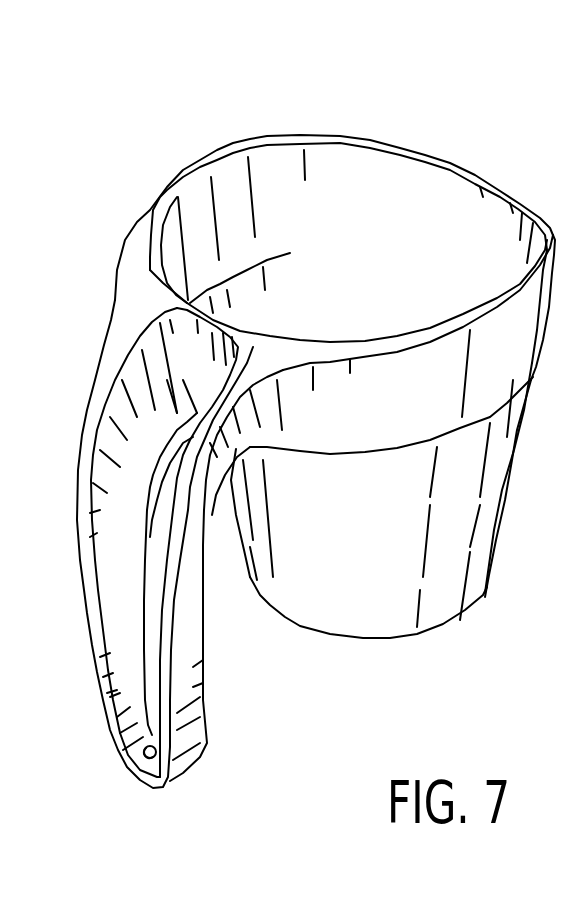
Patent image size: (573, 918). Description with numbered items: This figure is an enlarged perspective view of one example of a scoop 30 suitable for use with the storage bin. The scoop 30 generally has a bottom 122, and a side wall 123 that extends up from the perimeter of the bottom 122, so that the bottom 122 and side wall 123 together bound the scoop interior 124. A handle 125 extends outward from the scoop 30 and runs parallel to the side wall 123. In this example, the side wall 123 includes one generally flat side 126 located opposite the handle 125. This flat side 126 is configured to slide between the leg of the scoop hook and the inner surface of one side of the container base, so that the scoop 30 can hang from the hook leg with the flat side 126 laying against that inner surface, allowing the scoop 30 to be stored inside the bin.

The scoop 30 is at (431, 126).
The bottom 122 is at (389, 638).
The side wall 123 is at (345, 627).
The scoop interior 124 is at (488, 245).
The handle 125 is at (183, 660).
The flat side 126 is at (273, 160).